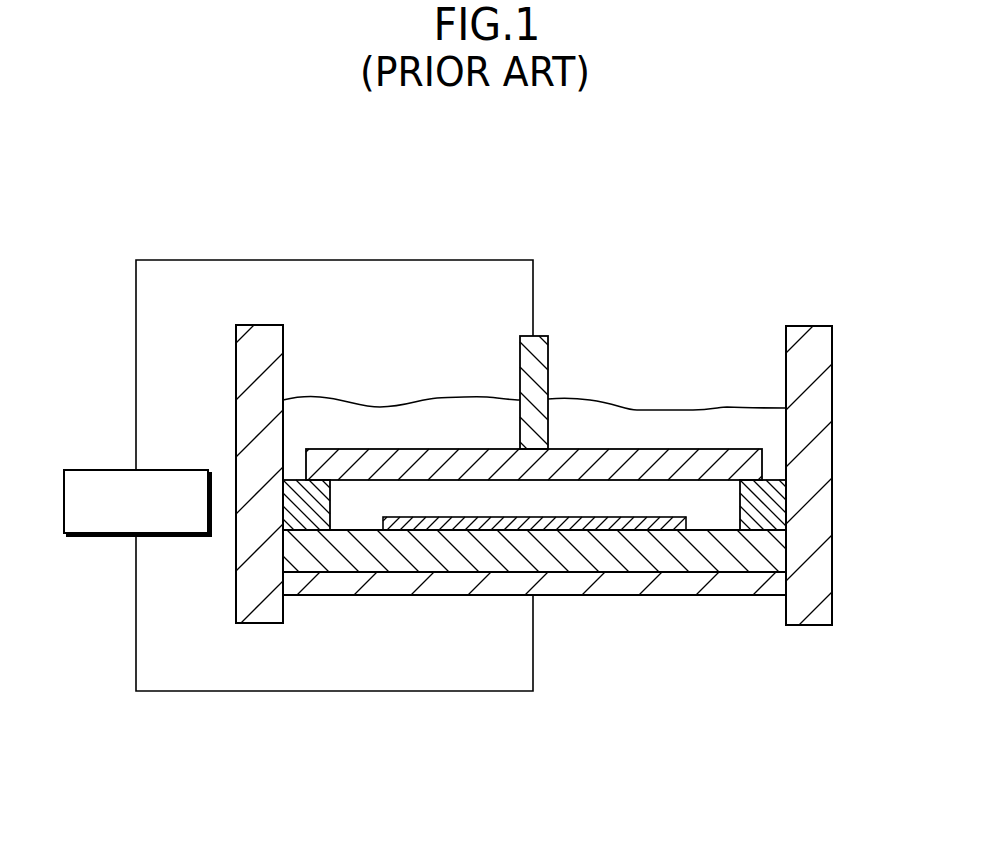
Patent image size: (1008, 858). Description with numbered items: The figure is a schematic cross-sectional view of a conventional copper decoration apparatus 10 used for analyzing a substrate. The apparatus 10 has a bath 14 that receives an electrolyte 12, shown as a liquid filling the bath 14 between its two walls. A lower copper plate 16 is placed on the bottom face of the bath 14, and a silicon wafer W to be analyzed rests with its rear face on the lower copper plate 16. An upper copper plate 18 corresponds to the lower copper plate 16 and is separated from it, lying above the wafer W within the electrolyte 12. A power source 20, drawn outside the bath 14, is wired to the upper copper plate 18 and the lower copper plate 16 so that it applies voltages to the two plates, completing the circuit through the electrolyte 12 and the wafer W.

The copper decoration apparatus 10 is at (779, 271).
The electrolyte 12 is at (732, 422).
The bath 14 is at (822, 447).
The lower copper plate 16 is at (670, 560).
The upper copper plate 18 is at (634, 455).
The power source 20 is at (93, 470).
The silicon wafer W is at (588, 523).